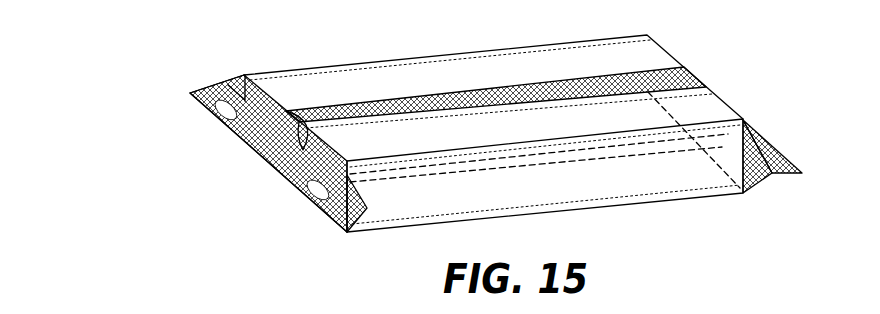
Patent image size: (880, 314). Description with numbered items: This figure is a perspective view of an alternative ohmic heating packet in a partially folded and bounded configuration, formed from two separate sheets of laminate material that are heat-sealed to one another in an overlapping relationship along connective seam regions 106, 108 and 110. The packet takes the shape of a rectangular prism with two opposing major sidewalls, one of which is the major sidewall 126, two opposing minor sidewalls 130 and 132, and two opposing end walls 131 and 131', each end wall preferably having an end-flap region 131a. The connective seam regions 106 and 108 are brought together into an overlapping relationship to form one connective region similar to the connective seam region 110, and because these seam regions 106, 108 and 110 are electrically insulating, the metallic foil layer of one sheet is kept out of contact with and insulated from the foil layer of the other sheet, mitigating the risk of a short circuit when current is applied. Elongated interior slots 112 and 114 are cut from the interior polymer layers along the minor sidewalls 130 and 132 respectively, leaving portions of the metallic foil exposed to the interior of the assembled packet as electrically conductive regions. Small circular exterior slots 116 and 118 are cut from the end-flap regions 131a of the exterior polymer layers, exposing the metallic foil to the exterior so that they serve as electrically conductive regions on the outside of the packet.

The connective seam region 106 is at (670, 147).
The connective seam region 108 is at (660, 82).
The connective seam region 110 is at (633, 143).
The elongated interior slot 112 is at (436, 200).
The elongated interior slot 114 is at (421, 67).
The exterior slot 116 is at (225, 108).
The exterior slot 118 is at (300, 194).
The major sidewall 126 is at (627, 63).
The minor sidewall 130 is at (600, 180).
The end wall 131 is at (216, 153).
The end-flap region 131a is at (298, 170).
The end wall 131' is at (769, 130).
The minor sidewall 132 is at (288, 79).